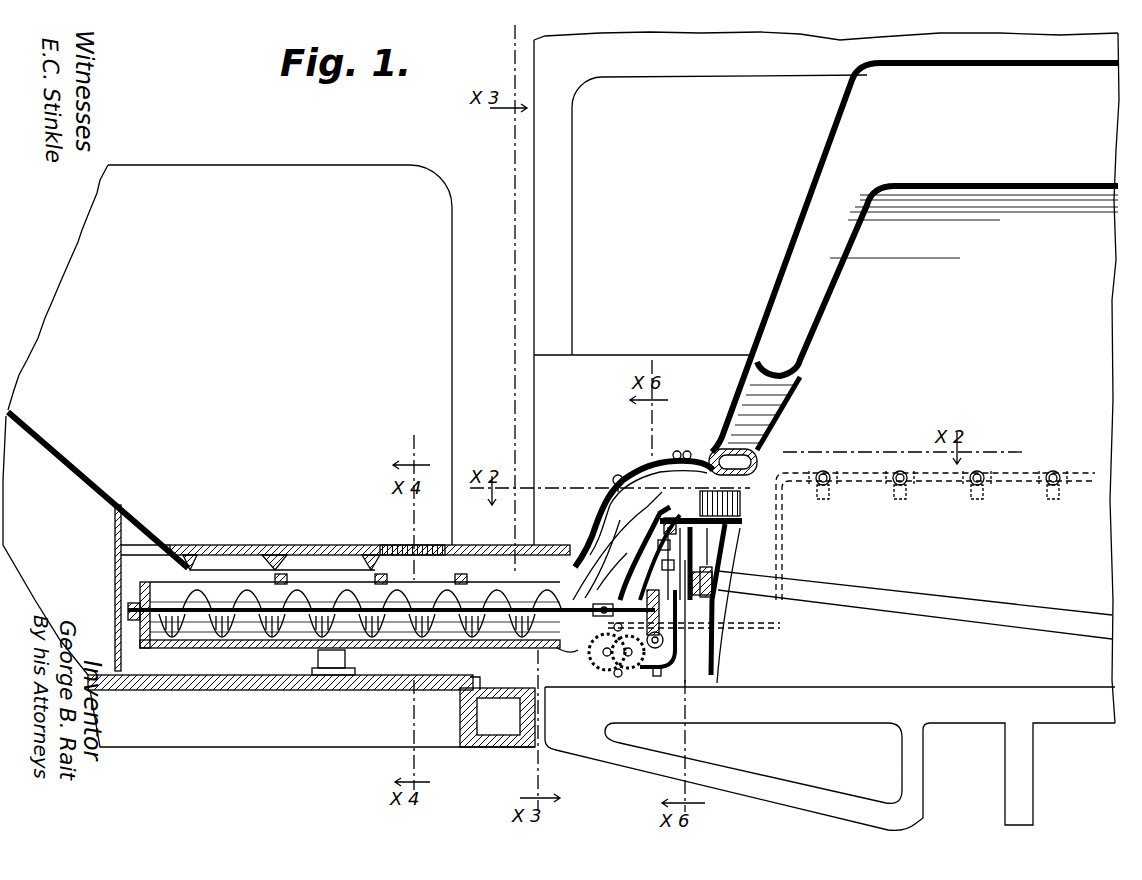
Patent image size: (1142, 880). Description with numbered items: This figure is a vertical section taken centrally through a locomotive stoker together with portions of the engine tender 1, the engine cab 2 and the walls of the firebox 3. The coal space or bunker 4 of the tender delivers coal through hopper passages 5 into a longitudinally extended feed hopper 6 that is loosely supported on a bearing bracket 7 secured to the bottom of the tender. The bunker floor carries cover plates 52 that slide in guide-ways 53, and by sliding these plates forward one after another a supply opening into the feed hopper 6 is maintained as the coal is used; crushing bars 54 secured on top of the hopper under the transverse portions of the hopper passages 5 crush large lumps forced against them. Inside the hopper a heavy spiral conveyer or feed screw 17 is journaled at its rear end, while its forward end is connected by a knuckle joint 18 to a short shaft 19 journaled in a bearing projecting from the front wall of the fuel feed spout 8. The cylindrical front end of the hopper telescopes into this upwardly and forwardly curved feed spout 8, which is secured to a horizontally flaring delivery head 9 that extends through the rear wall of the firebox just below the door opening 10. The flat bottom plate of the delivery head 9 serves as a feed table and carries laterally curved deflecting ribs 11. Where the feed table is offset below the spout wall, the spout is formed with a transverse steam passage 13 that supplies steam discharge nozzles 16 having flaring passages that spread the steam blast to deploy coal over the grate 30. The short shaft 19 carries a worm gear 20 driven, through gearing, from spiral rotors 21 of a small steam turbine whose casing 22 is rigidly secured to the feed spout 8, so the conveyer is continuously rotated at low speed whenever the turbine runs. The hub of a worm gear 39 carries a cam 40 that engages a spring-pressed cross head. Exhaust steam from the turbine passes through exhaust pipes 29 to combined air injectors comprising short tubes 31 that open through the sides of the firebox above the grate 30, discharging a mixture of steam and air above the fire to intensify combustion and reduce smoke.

The engine tender 1 is at (212, 172).
The engine cab 2 is at (572, 215).
The walls of the firebox 3 is at (818, 313).
The coal space or bunker 4 is at (227, 420).
The hopper passages 5 is at (192, 565).
The feed hopper 6 is at (300, 632).
The bearing bracket 7 is at (327, 668).
The fuel feed spout 8 is at (600, 512).
The delivery head 9 is at (700, 485).
The door opening 10 is at (797, 405).
The deflecting ribs 11 is at (745, 507).
The steam passage 13 is at (620, 505).
The steam discharge nozzles 16 is at (727, 527).
The spiral conveyer or feed screw 17 is at (215, 645).
The knuckle joint 18 is at (608, 592).
The short shaft 19 is at (669, 559).
The worm gear 20 is at (676, 619).
The spiral rotors 21 is at (598, 668).
The casing 22 is at (590, 655).
The exhaust pipes 29 is at (783, 558).
The grate 30 is at (1062, 608).
The short tubes 31 is at (830, 487).
The worm gear 39 is at (663, 646).
The cam 40 is at (680, 609).
The cover plates 52 is at (233, 547).
The guide-ways 53 is at (393, 548).
The crushing bars 54 is at (345, 578).